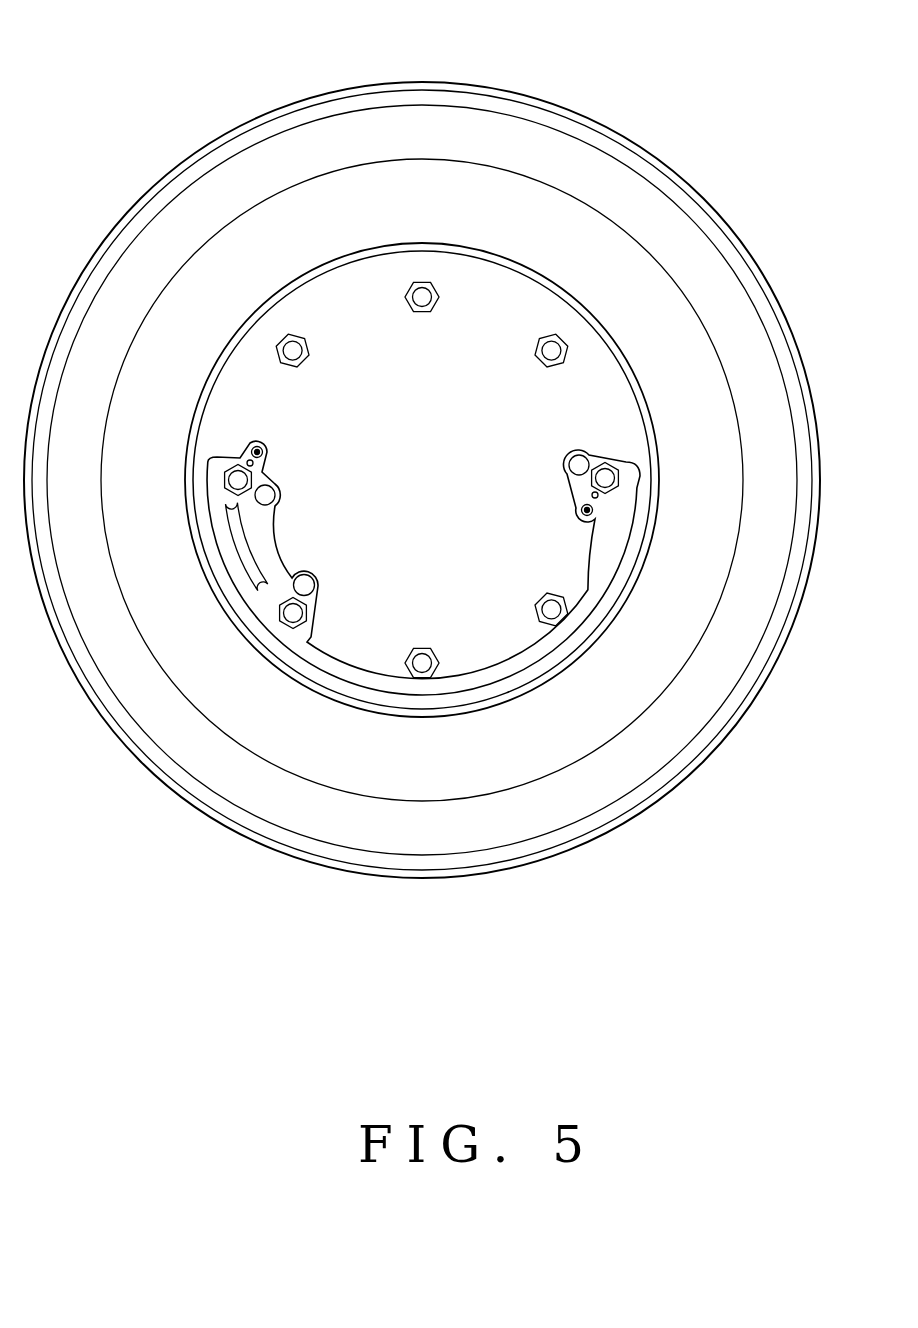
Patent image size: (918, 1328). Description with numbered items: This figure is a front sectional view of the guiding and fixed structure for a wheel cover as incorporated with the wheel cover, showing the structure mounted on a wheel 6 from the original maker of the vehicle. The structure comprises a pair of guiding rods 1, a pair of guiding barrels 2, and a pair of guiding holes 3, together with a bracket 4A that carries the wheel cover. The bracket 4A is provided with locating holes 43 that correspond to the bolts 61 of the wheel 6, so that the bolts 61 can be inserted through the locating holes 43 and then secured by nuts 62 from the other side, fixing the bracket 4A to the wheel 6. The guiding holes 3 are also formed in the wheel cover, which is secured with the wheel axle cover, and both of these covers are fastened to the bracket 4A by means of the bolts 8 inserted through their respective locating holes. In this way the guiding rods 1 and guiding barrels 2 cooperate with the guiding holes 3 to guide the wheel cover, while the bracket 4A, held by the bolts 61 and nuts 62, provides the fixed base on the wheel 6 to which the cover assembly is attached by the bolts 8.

The guiding rod 1 is at (612, 497).
The guiding barrel 2 is at (255, 446).
The guiding hole 3 is at (597, 497).
The bracket 4A is at (226, 545).
The wheel 6 is at (622, 195).
The bolt 8 is at (590, 512).
The locating hole 43 is at (581, 463).
The bolt 61 is at (419, 298).
The nut 62 is at (296, 608).